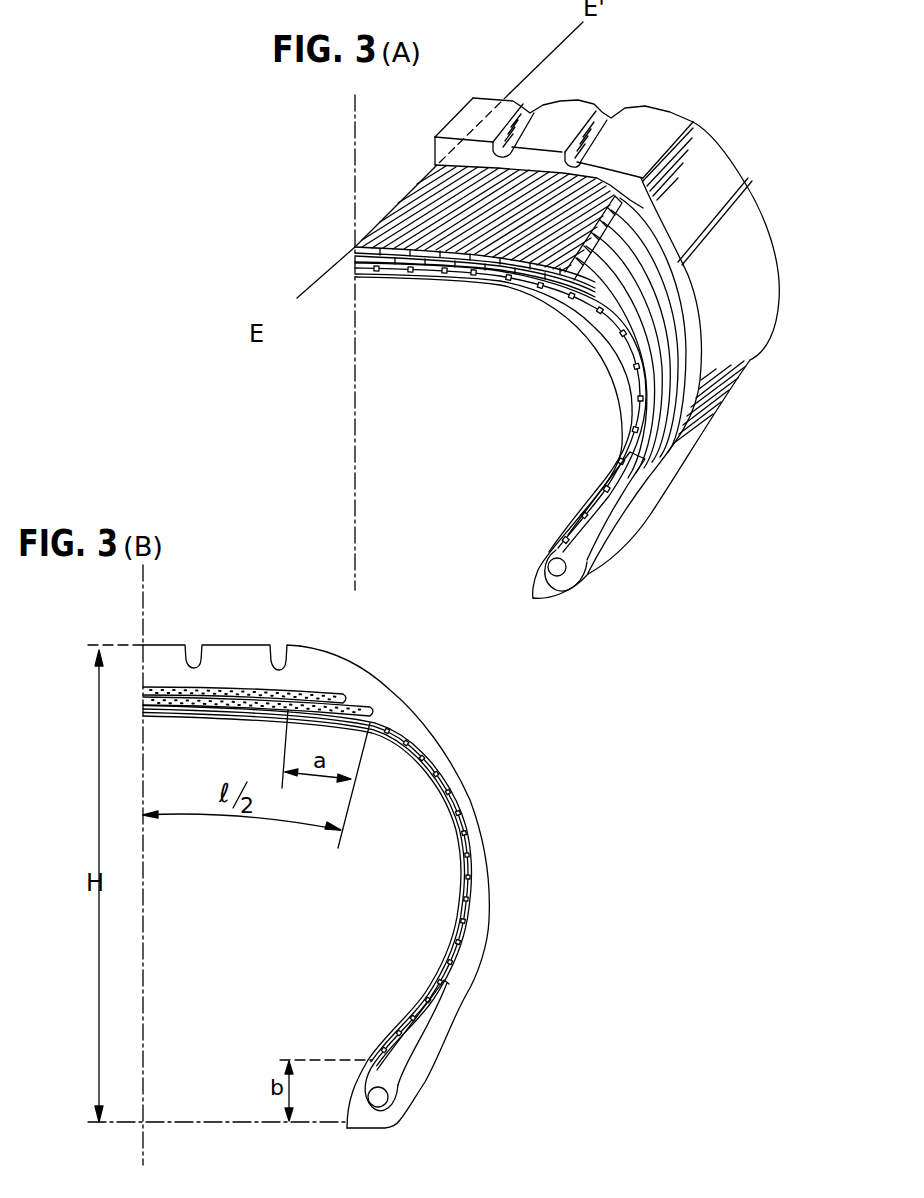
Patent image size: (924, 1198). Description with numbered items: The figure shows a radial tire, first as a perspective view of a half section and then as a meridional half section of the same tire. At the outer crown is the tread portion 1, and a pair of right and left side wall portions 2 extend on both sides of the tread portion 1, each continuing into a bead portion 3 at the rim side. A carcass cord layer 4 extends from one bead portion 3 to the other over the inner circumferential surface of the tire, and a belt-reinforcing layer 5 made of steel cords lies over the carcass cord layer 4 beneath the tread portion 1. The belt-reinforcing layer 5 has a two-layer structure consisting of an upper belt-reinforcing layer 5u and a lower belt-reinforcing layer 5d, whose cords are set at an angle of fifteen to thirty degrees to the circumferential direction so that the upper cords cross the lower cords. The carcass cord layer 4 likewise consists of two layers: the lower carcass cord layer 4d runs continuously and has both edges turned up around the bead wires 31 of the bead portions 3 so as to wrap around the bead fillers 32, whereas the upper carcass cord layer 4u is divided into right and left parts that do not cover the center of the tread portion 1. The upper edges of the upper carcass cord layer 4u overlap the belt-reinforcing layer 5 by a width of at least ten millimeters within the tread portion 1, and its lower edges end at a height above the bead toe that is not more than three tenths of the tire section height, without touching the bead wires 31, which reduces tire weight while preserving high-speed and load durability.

In FIG. 3A, the tread portion 1 is at (575, 108).
In FIG. 3B, the tread portion 1 is at (235, 648).
In FIG. 3A, the side wall portions 2 is at (772, 273).
In FIG. 3B, the side wall portions 2 is at (490, 870).
In FIG. 3A, the bead portions 3 is at (607, 527).
In FIG. 3B, the bead portions 3 is at (432, 1033).
In FIG. 3A, the carcass cord layer 4 is at (575, 502).
In FIG. 3A, the upper carcass cord layer 4u is at (636, 395).
In FIG. 3B, the upper carcass cord layer 4u is at (466, 886).
In FIG. 3A, the lower carcass cord layer 4d is at (607, 480).
In FIG. 3B, the lower carcass cord layer 4d is at (461, 923).
In FIG. 3A, the belt-reinforcing layer 5 is at (410, 182).
In FIG. 3A, the upper belt-reinforcing layer 5u is at (382, 248).
In FIG. 3B, the upper belt-reinforcing layer 5u is at (178, 690).
In FIG. 3A, the lower belt-reinforcing layer 5d is at (420, 267).
In FIG. 3B, the lower belt-reinforcing layer 5d is at (203, 705).
In FIG. 3A, the bead wires 31 is at (546, 566).
In FIG. 3B, the bead wires 31 is at (386, 1102).
In FIG. 3A, the bead fillers 32 is at (567, 548).
In FIG. 3B, the bead fillers 32 is at (397, 1072).